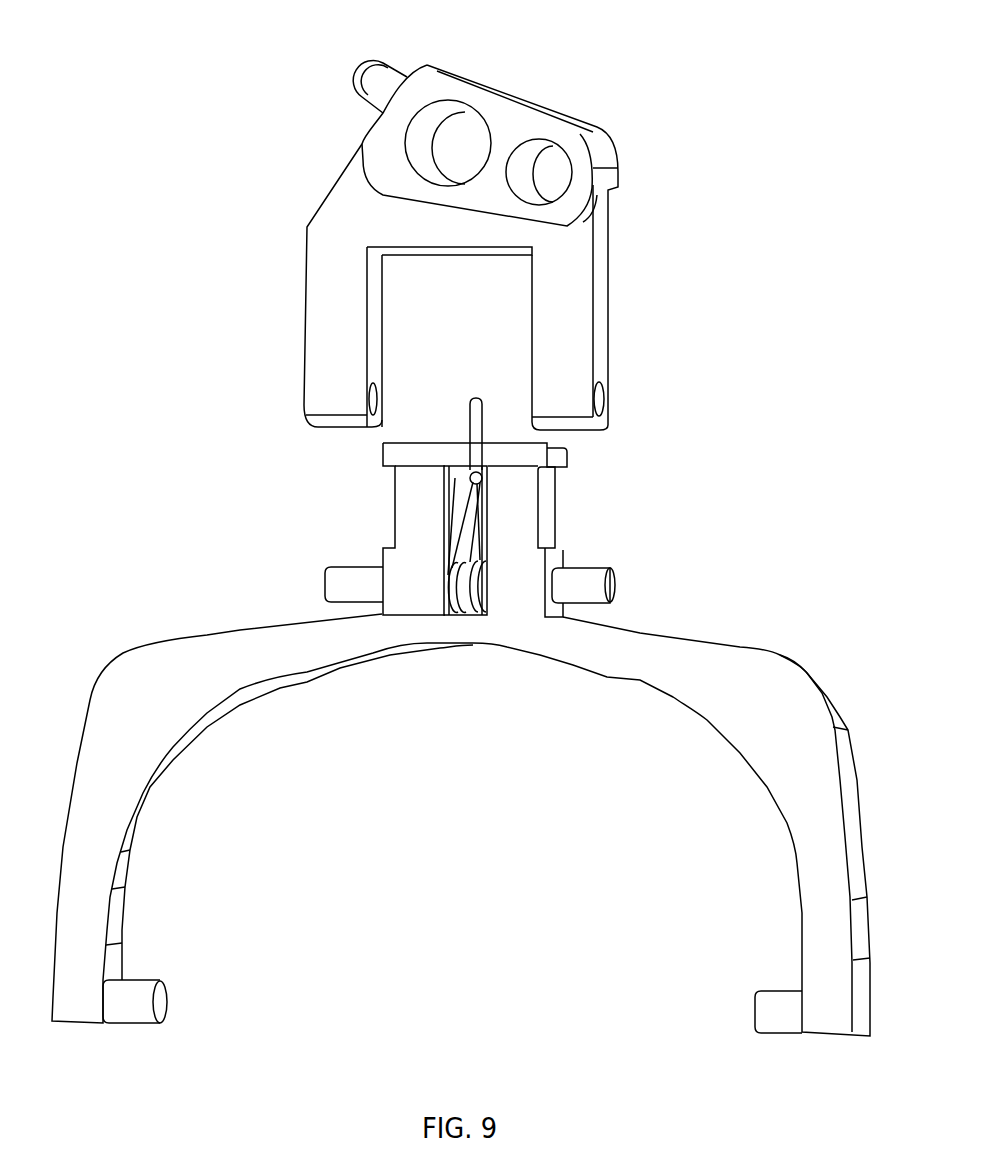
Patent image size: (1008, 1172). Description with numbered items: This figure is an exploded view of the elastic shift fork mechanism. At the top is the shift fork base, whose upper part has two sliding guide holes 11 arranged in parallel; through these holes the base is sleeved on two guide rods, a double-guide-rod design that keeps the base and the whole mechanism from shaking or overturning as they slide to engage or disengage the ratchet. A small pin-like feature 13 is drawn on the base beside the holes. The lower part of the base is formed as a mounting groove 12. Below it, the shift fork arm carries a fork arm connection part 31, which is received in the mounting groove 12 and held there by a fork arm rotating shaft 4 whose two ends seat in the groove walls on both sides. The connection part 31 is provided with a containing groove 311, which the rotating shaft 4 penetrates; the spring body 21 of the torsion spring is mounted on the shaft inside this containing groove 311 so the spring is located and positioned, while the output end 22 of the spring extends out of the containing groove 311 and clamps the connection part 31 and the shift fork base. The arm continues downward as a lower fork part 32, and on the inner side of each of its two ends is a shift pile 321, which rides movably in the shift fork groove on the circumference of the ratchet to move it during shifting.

The sliding guide holes 11 is at (545, 158).
The mounting groove 12 is at (513, 317).
The positioning pin 13 is at (378, 90).
The spring body 21 is at (465, 580).
The output end 22 is at (477, 432).
The fork arm connection part 31 is at (523, 538).
The containing groove 311 is at (475, 543).
The lower fork part 32 is at (133, 673).
The shift pile 321 is at (129, 1008).
The fork arm rotating shaft 4 is at (360, 573).